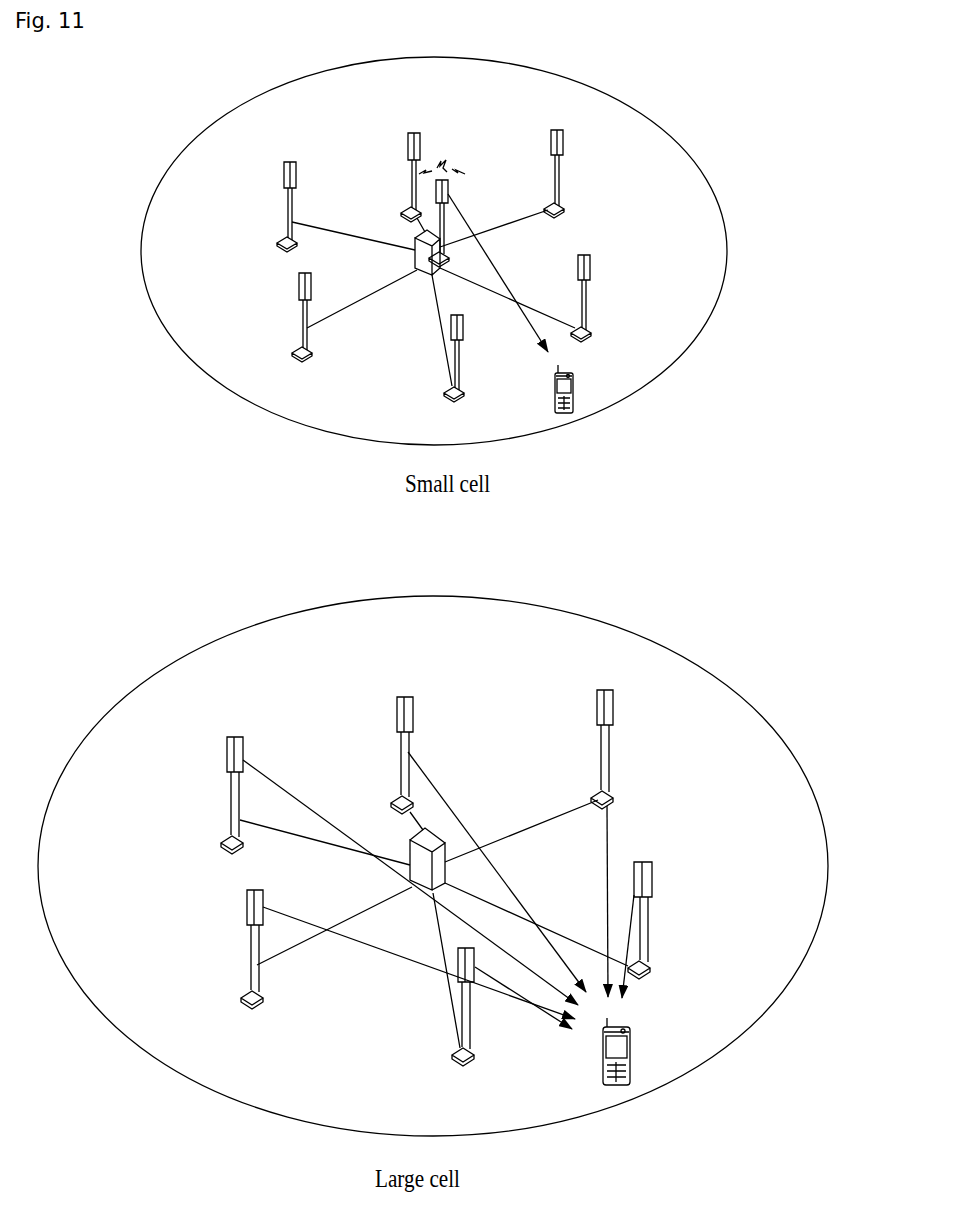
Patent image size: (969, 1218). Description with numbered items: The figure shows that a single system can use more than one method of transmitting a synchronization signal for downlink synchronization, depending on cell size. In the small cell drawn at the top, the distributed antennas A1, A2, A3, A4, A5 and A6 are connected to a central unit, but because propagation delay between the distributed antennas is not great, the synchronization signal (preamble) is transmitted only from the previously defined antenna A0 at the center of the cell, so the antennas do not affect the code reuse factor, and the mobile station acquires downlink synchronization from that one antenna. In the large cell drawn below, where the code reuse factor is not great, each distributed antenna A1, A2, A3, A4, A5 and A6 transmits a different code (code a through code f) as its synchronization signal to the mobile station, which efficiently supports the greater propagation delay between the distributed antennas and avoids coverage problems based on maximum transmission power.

The previously defined antenna A0 is at (488, 266).
The distributed antenna A1 is at (482, 546).
The distributed antenna A2 is at (390, 568).
The distributed antenna A3 is at (372, 632).
The distributed antenna A4 is at (506, 718).
The distributed antenna A5 is at (629, 610).
The distributed antenna A6 is at (594, 547).